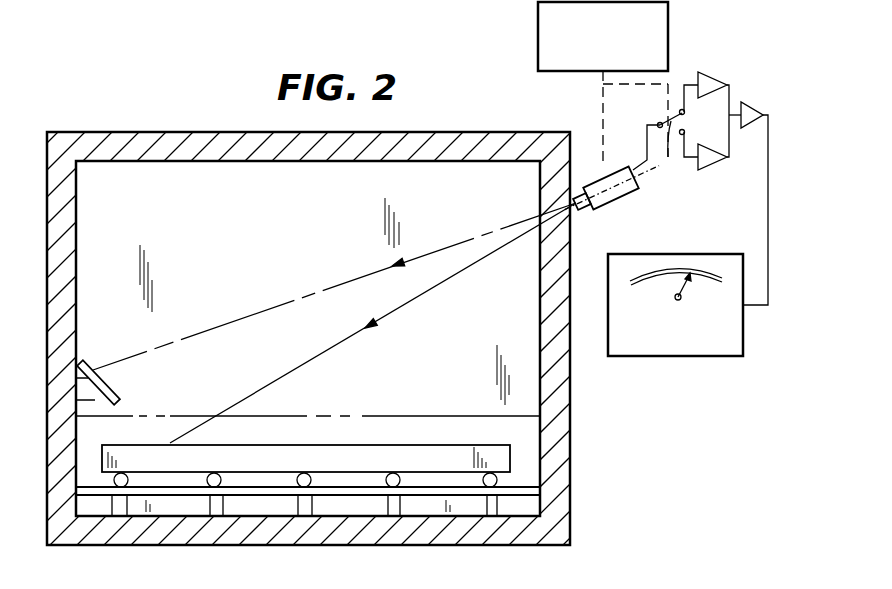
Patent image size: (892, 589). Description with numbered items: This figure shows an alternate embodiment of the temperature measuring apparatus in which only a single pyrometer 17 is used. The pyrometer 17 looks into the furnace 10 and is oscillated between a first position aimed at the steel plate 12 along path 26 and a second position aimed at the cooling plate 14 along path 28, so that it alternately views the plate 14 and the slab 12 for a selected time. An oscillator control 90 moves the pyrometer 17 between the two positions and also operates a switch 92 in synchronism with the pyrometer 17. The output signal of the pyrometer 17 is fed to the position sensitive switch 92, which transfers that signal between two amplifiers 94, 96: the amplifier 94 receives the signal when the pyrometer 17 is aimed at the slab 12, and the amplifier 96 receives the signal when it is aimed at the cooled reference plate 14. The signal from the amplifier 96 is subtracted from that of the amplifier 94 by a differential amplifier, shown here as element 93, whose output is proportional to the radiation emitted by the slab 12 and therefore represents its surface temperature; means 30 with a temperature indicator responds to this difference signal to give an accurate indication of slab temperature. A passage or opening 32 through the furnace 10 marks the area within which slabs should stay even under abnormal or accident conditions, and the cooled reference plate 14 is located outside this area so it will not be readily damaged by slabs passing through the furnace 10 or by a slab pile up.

The furnace 10 is at (192, 132).
The steel plate 12 is at (356, 458).
The cooling plate 14 is at (95, 364).
The pyrometer 17 is at (622, 201).
The path 26 is at (293, 371).
The path 28 is at (262, 313).
The means 30 is at (658, 356).
The passage or opening 32 is at (419, 417).
The oscillator control 90 is at (668, 27).
The position sensitive switch 92 is at (665, 136).
The amplifier 93 is at (762, 101).
The amplifier 94 is at (712, 72).
The amplifier 96 is at (710, 165).